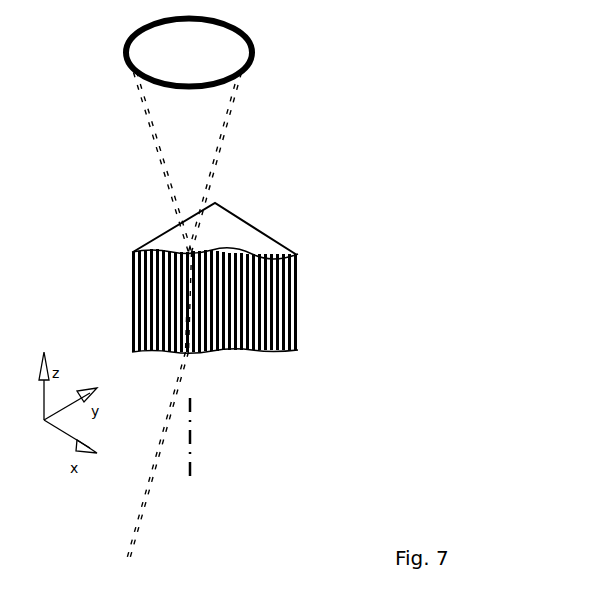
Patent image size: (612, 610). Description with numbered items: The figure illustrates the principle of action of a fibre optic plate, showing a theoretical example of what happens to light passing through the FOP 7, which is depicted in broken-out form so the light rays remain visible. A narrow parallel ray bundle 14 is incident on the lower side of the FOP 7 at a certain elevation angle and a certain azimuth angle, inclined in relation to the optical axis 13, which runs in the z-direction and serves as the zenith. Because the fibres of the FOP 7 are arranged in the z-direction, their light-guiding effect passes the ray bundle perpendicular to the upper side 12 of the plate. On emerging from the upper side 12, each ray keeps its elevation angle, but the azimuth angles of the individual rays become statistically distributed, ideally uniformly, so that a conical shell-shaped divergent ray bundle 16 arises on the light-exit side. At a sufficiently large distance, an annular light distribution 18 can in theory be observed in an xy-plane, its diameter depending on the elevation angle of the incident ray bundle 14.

The FOP 7 is at (241, 301).
The upper side 12 is at (217, 228).
The optical axis 13 is at (229, 441).
The narrow parallel ray bundle 14 is at (202, 537).
The conical shell-shaped divergent ray bundle 16 is at (228, 212).
The annular light distribution 18 is at (219, 51).